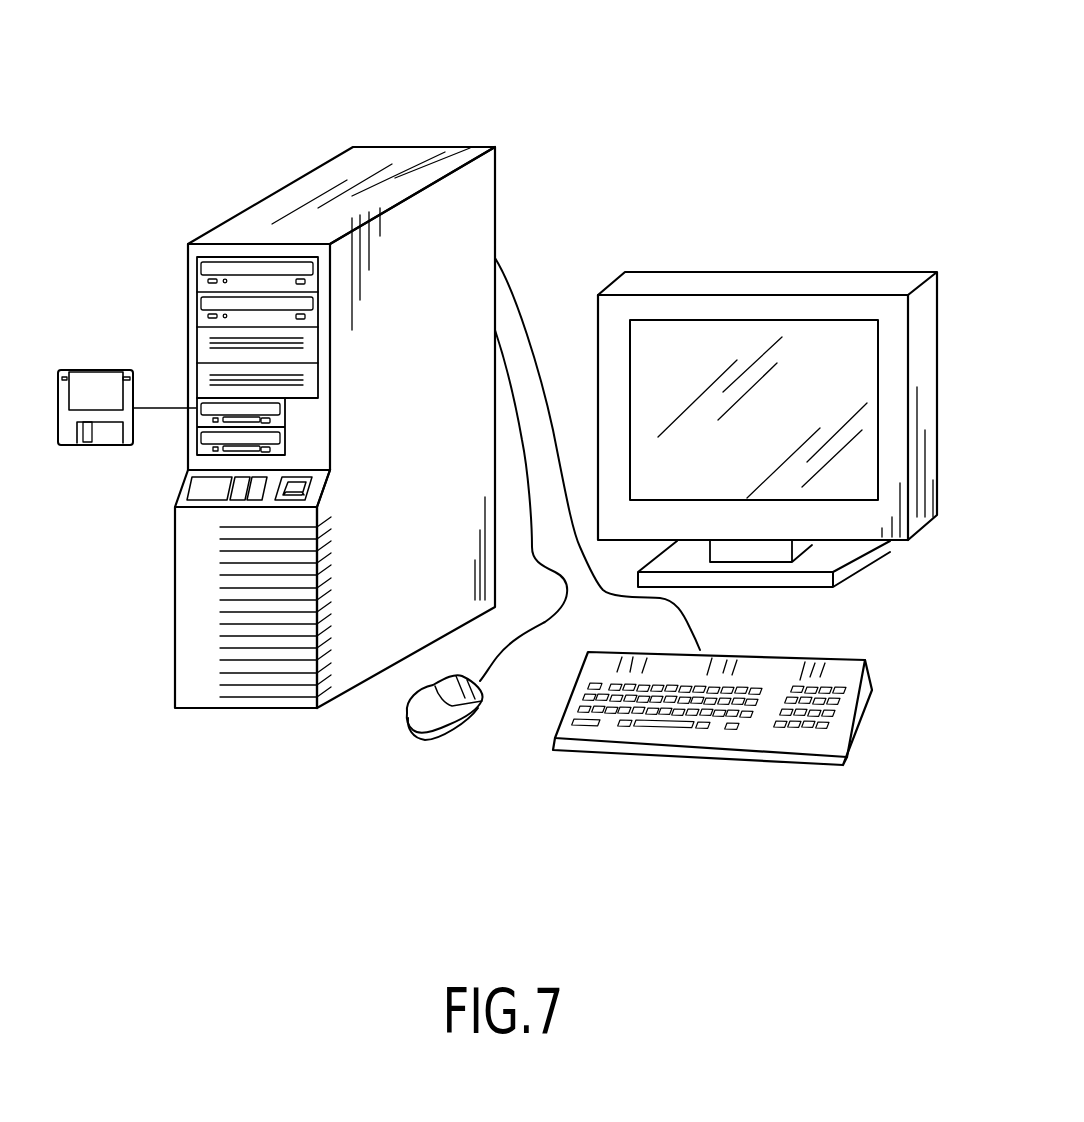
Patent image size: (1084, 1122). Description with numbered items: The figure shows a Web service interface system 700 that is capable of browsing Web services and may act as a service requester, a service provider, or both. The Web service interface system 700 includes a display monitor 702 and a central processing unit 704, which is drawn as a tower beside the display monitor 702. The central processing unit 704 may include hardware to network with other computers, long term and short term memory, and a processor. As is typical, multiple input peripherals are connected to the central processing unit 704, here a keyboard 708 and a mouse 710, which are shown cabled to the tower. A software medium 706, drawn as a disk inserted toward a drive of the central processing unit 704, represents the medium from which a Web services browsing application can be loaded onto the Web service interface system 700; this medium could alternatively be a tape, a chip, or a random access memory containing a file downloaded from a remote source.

The Web service interface system 700 is at (655, 46).
The display monitor 702 is at (782, 272).
The central processing unit 704 is at (427, 147).
The software medium 706 is at (93, 370).
The keyboard 708 is at (700, 761).
The mouse 710 is at (432, 738).